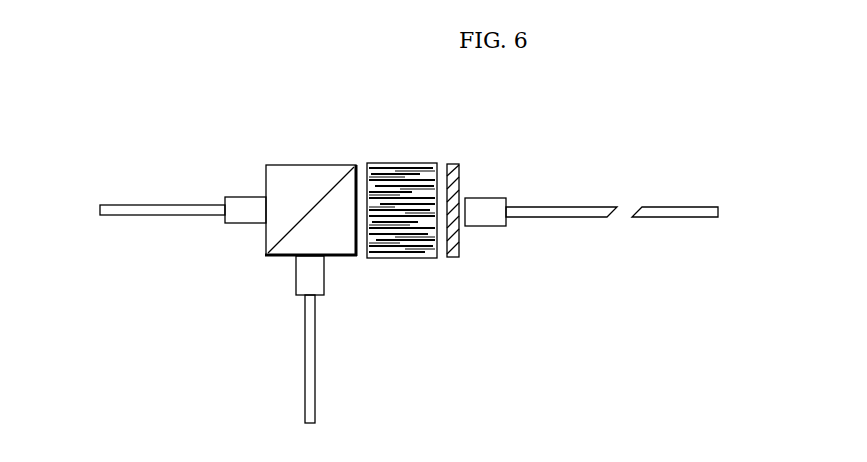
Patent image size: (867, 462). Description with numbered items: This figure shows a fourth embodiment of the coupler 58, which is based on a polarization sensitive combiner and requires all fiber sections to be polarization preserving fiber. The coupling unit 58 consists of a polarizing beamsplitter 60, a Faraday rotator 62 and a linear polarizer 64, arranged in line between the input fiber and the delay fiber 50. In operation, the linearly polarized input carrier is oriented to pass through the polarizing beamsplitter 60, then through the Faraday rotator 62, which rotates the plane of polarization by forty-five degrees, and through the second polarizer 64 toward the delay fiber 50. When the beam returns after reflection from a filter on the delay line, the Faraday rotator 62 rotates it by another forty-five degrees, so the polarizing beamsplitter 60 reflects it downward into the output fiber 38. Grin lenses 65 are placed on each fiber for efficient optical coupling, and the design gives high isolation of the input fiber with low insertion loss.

The coupler 58 is at (230, 128).
The polarizing beamsplitter 60 is at (283, 163).
The Faraday rotator 62 is at (402, 163).
The linear polarizer 64 is at (453, 164).
The Grin lenses 65 is at (238, 224).
The output fiber 38 is at (315, 322).
The delay fiber 50 is at (578, 207).